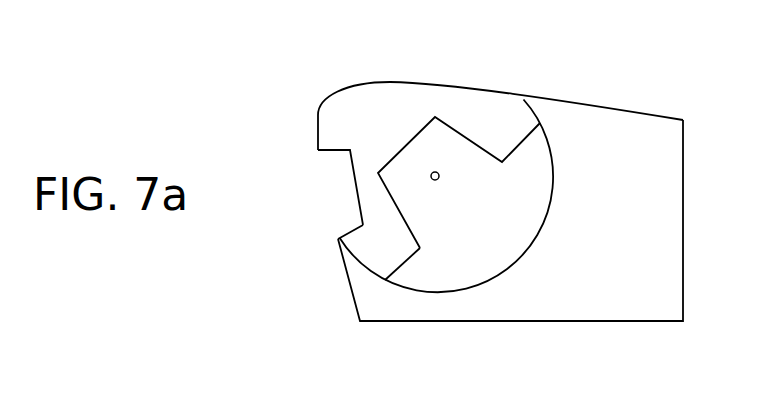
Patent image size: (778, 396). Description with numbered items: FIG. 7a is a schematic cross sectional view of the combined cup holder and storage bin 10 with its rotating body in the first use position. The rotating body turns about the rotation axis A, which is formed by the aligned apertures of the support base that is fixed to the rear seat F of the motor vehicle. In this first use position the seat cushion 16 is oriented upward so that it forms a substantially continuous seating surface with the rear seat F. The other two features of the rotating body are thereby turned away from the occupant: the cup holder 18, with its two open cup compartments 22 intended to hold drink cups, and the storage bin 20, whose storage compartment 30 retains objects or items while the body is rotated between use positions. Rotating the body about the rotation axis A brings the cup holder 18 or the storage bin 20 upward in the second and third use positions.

The combined cup holder and storage bin 10 is at (284, 148).
The seat cushion 16 is at (405, 82).
The cup holder 18 is at (408, 260).
The storage bin 20 is at (338, 239).
The open cup compartments 22 is at (410, 227).
The storage compartment 30 is at (357, 192).
The rear seat F is at (610, 108).
The rotation axis A is at (439, 176).